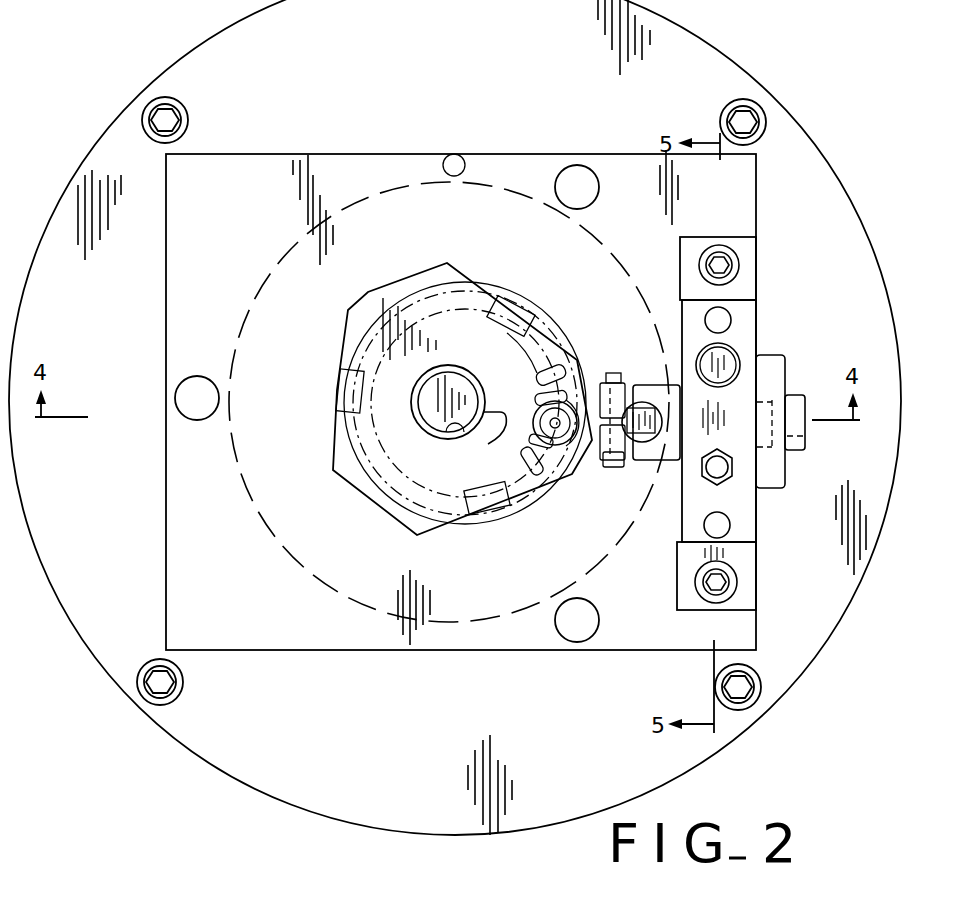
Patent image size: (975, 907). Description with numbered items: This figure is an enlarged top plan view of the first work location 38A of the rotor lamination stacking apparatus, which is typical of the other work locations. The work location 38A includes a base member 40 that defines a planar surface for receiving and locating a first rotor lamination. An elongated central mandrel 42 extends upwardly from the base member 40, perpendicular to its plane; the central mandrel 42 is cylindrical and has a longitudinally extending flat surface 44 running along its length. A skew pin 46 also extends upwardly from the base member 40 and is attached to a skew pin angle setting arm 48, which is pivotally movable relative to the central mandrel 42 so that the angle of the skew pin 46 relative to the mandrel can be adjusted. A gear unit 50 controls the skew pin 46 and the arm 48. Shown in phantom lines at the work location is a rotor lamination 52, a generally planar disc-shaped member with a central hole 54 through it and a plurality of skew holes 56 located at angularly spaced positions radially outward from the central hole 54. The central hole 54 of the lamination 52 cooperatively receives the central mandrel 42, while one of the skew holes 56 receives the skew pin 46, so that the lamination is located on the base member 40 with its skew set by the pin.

The first work location 38A is at (330, 661).
The base member 40 is at (430, 530).
The central mandrel 42 is at (462, 366).
The flat surface 44 is at (487, 442).
The skew pin 46 is at (563, 442).
The skew pin angle setting arm 48 is at (645, 414).
The gear unit 50 is at (768, 335).
The rotor lamination 52 is at (512, 498).
The central hole 54 is at (456, 423).
The skew holes 56 is at (563, 393).